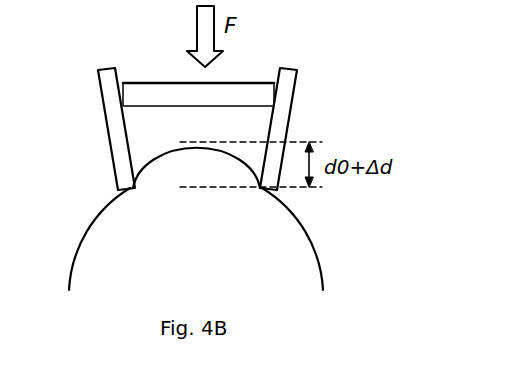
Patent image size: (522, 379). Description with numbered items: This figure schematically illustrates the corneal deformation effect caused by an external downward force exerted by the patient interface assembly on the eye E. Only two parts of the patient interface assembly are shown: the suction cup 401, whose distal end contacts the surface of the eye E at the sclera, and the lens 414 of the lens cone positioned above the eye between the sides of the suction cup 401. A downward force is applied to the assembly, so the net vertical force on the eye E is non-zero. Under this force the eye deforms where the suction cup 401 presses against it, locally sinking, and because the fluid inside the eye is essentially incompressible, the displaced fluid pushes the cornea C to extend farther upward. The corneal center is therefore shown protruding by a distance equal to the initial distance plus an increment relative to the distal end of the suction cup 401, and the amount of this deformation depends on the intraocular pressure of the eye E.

The suction cup 401 is at (120, 152).
The lens 414 is at (252, 93).
The cornea C is at (152, 159).
The eye E is at (203, 278).